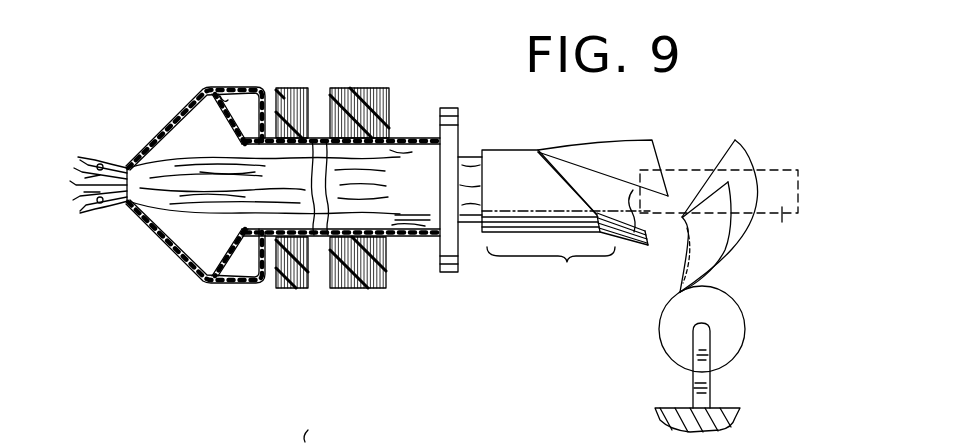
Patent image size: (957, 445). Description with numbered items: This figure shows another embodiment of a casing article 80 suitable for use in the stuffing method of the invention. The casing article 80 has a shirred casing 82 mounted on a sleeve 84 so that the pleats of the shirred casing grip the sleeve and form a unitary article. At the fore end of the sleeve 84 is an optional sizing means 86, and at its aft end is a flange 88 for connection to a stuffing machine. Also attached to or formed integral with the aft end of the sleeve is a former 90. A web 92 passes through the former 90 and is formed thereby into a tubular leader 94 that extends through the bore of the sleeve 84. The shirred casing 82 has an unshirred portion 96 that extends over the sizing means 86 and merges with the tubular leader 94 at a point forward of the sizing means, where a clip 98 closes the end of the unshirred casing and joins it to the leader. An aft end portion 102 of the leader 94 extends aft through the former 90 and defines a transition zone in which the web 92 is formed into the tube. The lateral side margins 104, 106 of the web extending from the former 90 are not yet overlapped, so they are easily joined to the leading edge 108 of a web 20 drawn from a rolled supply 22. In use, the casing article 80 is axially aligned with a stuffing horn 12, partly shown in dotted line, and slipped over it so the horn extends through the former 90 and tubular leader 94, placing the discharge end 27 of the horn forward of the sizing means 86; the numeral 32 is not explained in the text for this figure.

The casing article 80 is at (392, 70).
The shirred casing 82 is at (297, 87).
The sleeve 84 is at (320, 223).
The sizing means 86 is at (223, 103).
The flange 88 is at (450, 274).
The former 90 is at (500, 195).
The web 92 is at (597, 178).
The tubular leader 94 is at (344, 190).
The unshirred portion 96 is at (242, 108).
The clip 98 is at (100, 163).
The aft end portion 102 is at (551, 272).
The lateral side margin 104 is at (641, 150).
The lateral side margin 106 is at (650, 200).
The leading edge 108 is at (728, 150).
The stuffing horn 12 is at (782, 215).
The web 20 is at (720, 254).
The rolled supply 22 is at (735, 323).
The discharge end 27 is at (636, 238).
The base 32 is at (321, 433).